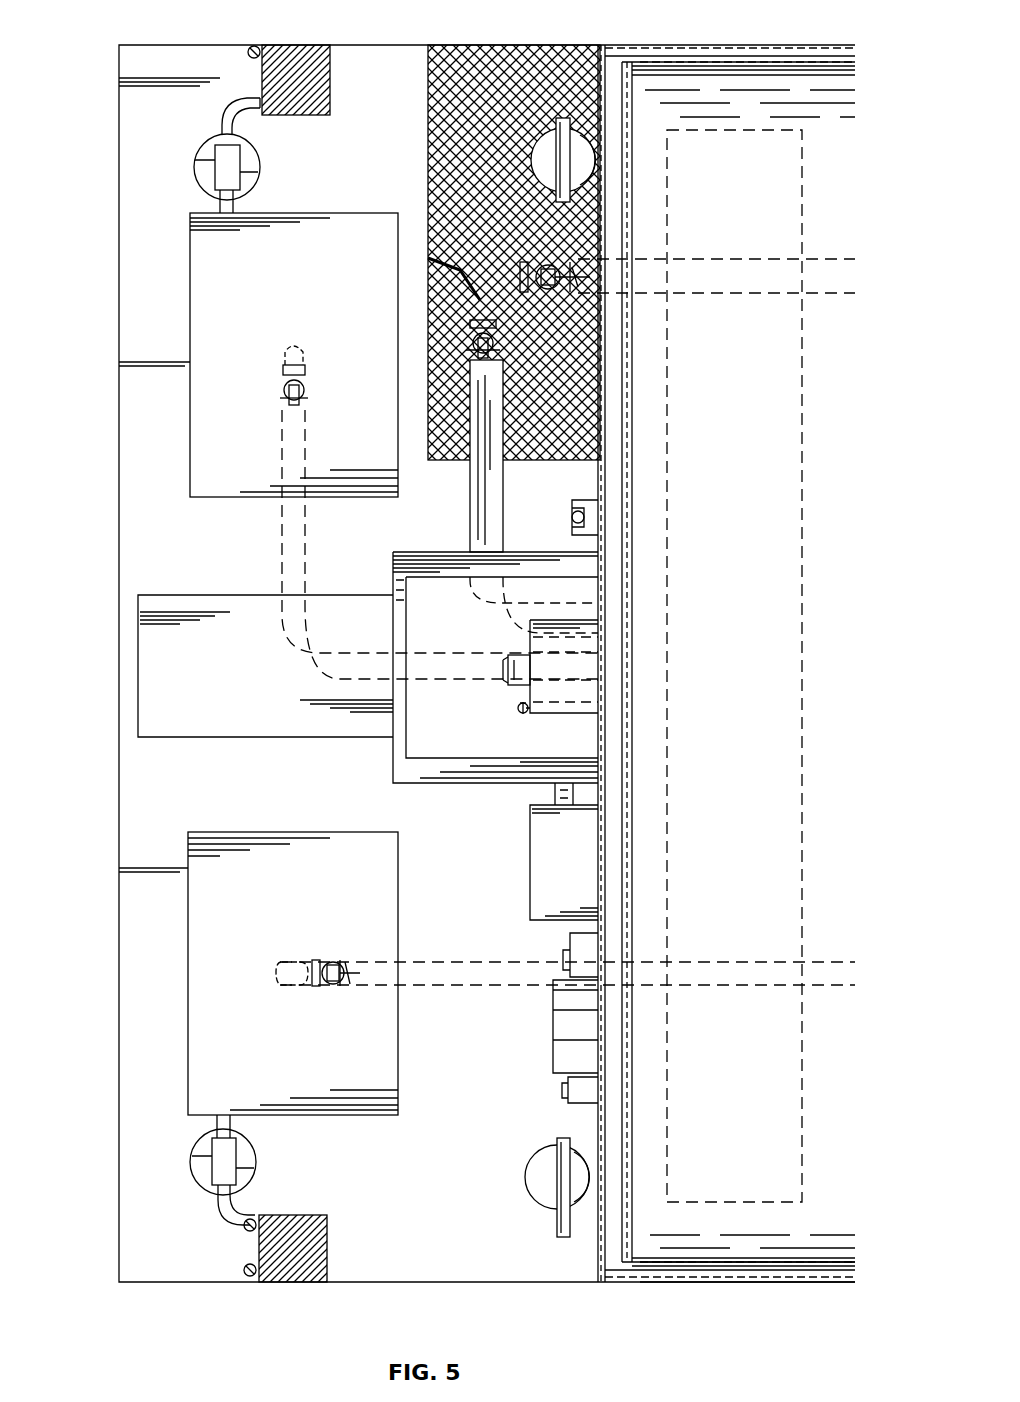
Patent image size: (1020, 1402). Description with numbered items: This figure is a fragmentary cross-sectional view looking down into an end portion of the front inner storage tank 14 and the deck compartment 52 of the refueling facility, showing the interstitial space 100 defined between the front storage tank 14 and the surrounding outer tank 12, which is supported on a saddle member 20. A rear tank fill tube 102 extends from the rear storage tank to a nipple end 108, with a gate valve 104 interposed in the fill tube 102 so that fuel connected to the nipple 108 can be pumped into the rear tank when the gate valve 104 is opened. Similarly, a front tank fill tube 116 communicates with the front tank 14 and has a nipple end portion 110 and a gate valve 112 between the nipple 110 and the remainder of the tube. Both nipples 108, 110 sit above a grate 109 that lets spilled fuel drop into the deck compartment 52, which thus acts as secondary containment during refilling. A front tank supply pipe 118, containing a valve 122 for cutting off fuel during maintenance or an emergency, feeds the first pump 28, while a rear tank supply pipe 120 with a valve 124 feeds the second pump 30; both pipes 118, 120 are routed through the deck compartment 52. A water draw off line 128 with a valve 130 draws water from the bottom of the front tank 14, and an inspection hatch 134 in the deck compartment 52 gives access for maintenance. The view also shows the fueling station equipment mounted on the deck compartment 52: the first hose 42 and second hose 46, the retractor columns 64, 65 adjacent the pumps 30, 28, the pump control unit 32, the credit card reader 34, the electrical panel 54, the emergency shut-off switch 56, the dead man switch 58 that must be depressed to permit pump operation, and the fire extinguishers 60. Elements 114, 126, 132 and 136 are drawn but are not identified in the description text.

The outer tank 12 is at (745, 1282).
The front inner storage tank 14 is at (700, 1262).
The saddle member 20 is at (802, 505).
The first pump 28 is at (190, 330).
The second pump 30 is at (188, 975).
The pump control unit 32 is at (530, 860).
The credit card reader 34 is at (555, 795).
The first hose 42 is at (236, 100).
The second hose 46 is at (244, 1272).
The deck compartment 52 is at (119, 480).
The electrical panel 54 is at (553, 1025).
The emergency shut-off switch 56 is at (563, 960).
The dead man switch 58 is at (562, 1090).
The fire extinguisher 60 is at (555, 112).
The retractor column 64 is at (327, 1250).
The retractor column 65 is at (298, 115).
The interstitial space 100 is at (680, 1282).
The rear tank fill tube 102 is at (700, 259).
The gate valve 104 is at (600, 370).
The nipple end 108 is at (480, 300).
The grate 109 is at (480, 95).
The nipple end portion 110 is at (520, 272).
The gate valve 112 is at (470, 345).
The sensor 114 is at (572, 517).
The front tank fill tube 116 is at (470, 500).
The front tank supply pipe 118 is at (282, 510).
The rear tank supply pipe 120 is at (705, 962).
The valve 122 is at (305, 378).
The valve 124 is at (318, 960).
The pipe union 126 is at (194, 167).
The water draw off line 128 is at (562, 713).
The valve 130 is at (518, 708).
The control housing 132 is at (393, 760).
The inspection hatch 134 is at (138, 733).
The solenoid valve 136 is at (505, 668).